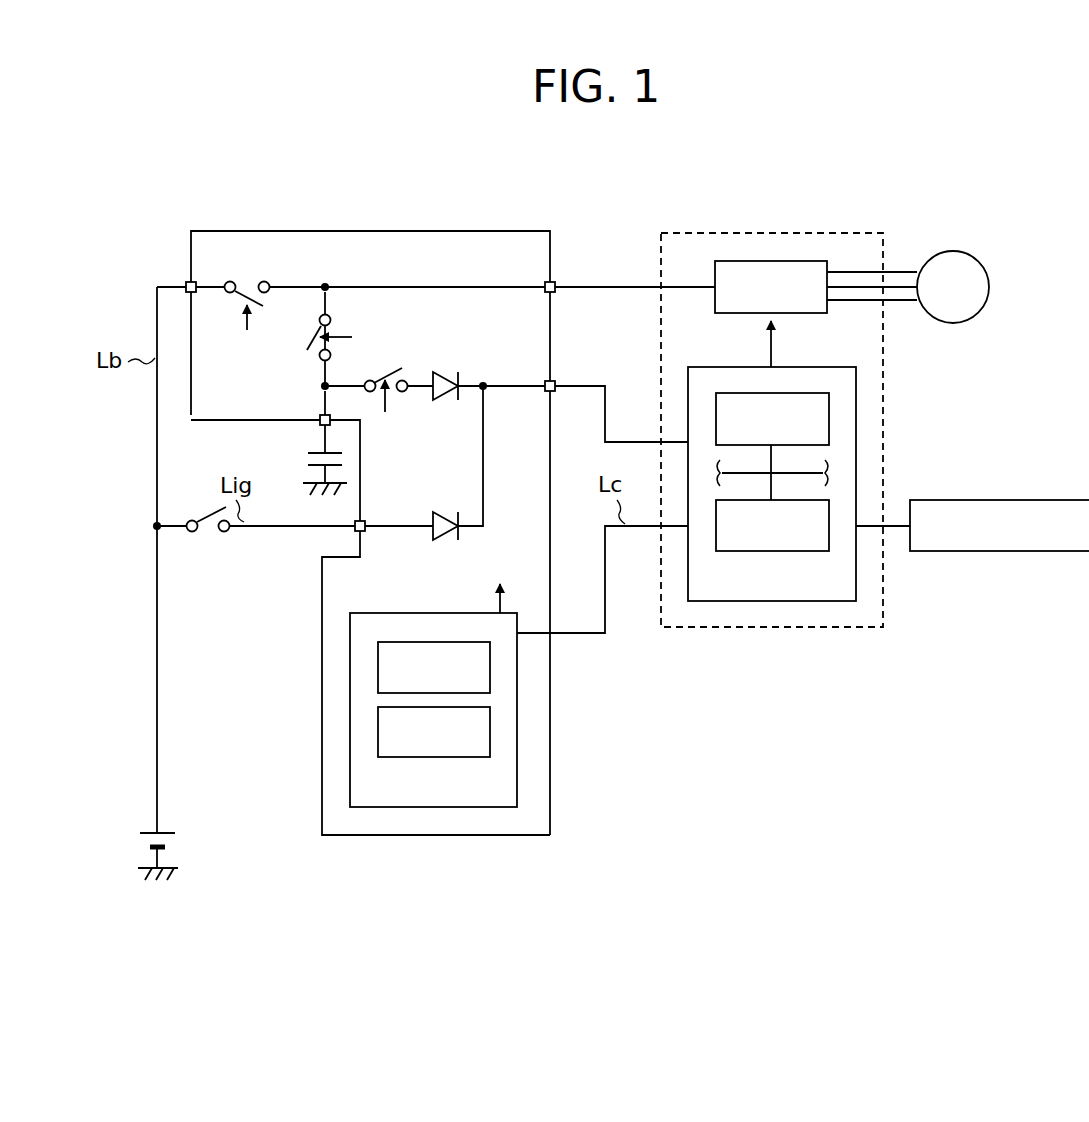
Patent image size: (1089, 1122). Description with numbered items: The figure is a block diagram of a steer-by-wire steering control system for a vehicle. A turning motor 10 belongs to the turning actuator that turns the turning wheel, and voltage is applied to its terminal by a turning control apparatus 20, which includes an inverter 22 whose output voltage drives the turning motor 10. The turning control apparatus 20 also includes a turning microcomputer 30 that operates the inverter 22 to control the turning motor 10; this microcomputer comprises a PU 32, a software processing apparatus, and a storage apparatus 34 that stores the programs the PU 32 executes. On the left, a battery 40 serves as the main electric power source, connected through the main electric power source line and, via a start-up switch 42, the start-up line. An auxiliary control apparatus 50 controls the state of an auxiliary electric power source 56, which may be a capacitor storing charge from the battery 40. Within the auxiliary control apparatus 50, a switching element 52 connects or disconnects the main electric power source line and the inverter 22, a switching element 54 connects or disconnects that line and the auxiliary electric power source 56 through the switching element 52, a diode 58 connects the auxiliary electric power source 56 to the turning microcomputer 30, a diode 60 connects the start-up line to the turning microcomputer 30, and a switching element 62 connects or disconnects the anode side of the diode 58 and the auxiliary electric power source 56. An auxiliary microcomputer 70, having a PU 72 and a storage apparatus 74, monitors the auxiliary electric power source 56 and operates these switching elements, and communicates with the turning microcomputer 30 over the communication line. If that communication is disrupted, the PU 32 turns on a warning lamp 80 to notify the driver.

The turning motor 10 is at (989, 287).
The turning control apparatus 20 is at (836, 233).
The inverter 22 is at (775, 261).
The turning microcomputer 30 is at (832, 367).
The PU 32 is at (829, 418).
The storage apparatus 34 is at (829, 512).
The battery 40 is at (148, 833).
The start-up switch 42 is at (209, 533).
The auxiliary control apparatus 50 is at (494, 231).
The switching element 52 is at (248, 287).
The switching element 54 is at (301, 352).
The auxiliary electric power source 56 is at (310, 453).
The diode 58 is at (445, 400).
The diode 60 is at (446, 540).
The switching element 62 is at (400, 371).
The auxiliary microcomputer 70 is at (517, 770).
The PU 72 is at (490, 668).
The storage apparatus 74 is at (490, 731).
The warning lamp 80 is at (999, 500).